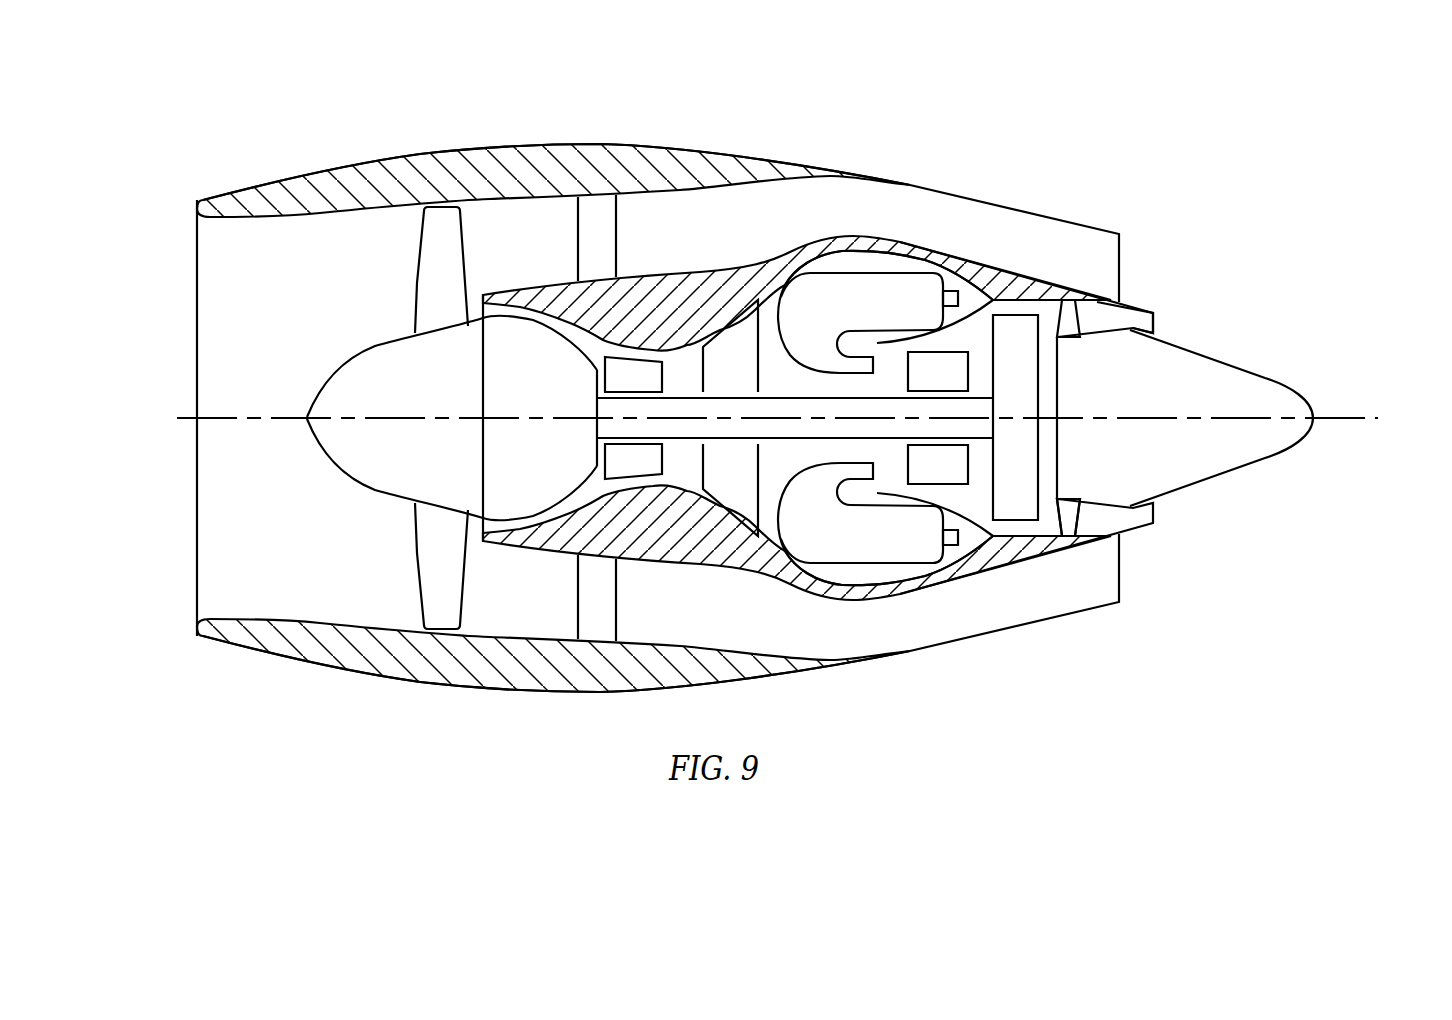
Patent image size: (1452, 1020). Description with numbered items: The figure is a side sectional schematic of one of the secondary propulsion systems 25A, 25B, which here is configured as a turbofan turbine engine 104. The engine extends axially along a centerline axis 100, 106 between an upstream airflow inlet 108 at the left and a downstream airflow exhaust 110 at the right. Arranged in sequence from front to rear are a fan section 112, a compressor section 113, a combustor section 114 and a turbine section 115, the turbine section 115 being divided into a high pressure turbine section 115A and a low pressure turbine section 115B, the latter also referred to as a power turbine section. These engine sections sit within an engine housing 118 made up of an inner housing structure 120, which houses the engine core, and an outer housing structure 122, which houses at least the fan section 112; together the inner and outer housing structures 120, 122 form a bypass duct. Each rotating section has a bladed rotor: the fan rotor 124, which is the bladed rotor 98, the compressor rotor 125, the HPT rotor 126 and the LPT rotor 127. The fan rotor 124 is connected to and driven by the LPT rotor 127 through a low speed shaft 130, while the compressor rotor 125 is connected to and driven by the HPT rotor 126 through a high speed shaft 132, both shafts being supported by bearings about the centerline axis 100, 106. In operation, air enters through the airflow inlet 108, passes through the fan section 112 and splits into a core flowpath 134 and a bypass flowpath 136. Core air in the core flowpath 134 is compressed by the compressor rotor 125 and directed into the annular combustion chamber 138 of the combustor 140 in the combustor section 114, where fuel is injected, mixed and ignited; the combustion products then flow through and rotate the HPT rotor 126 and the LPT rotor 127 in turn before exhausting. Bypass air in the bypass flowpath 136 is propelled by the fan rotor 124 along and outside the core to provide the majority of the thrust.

The secondary propulsion system 25A is at (1070, 369).
The secondary propulsion system 25B is at (1070, 369).
The turbofan turbine engine 104 is at (1150, 118).
The bladed rotor 98 is at (419, 422).
The fan rotor 124 is at (367, 487).
The engine centerline axis 100 is at (791, 368).
The centerline axis 106 is at (1352, 416).
The airflow inlet 108 is at (197, 300).
The airflow exhaust 110 is at (1106, 418).
The fan section 112 is at (387, 304).
The compressor section 113 is at (681, 425).
The combustor section 114 is at (885, 393).
The turbine section 115 is at (1032, 443).
The high pressure turbine section 115A is at (957, 494).
The low pressure turbine section 115B is at (1018, 527).
The engine housing 118 is at (713, 381).
The inner housing structure 120 is at (717, 262).
The outer housing structure 122 is at (685, 144).
The compressor rotor 125 is at (703, 495).
The HPT rotor 126 is at (1014, 488).
The LPT rotor 127 is at (1040, 452).
The low speed shaft 130 is at (597, 428).
The high speed shaft 132 is at (777, 388).
The core flowpath 134 is at (1097, 317).
The bypass flowpath 136 is at (546, 257).
The combustion chamber 138 is at (897, 553).
The combustor 140 is at (873, 553).